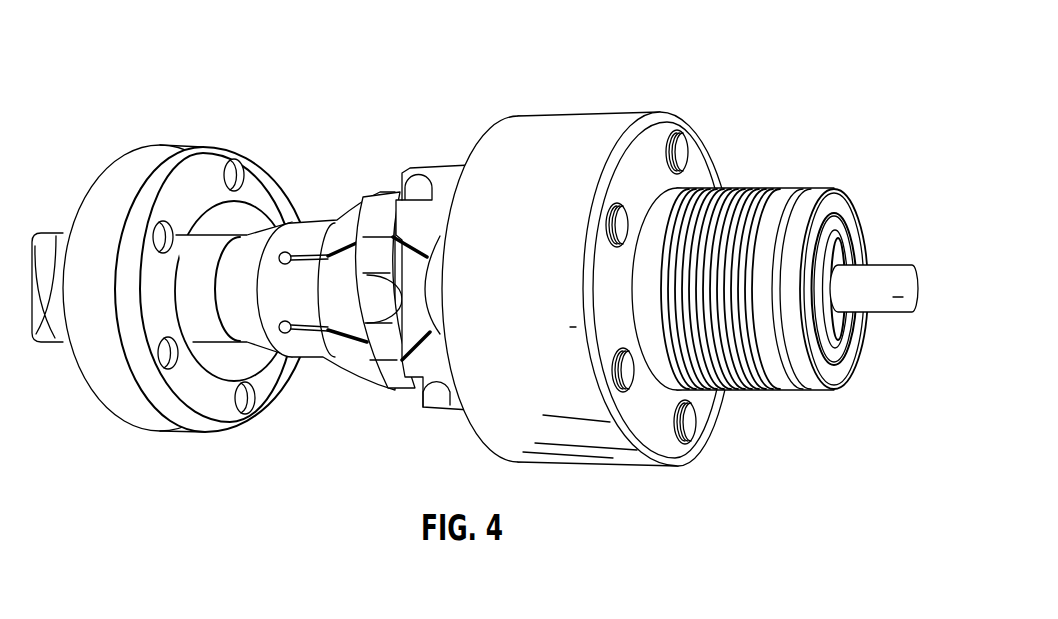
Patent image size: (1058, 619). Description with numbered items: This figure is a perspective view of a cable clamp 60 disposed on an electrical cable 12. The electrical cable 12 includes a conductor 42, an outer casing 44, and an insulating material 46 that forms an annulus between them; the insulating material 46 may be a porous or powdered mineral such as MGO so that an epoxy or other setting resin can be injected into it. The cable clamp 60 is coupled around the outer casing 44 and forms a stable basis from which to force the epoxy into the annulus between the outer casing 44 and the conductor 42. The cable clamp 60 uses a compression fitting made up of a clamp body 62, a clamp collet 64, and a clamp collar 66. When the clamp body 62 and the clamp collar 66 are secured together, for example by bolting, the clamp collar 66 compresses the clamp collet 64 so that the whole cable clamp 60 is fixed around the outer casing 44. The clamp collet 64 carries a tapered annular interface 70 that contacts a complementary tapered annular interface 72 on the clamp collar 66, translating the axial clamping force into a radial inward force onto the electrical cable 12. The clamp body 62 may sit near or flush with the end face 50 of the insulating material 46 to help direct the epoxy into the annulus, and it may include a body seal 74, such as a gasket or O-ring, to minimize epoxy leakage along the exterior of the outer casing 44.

The electrical cable 12 is at (696, 256).
The conductor 42 is at (897, 313).
The outer casing 44 is at (832, 353).
The insulating material 46 is at (830, 335).
The end face 50 is at (850, 248).
The cable clamp 60 is at (251, 245).
The clamp body 62 is at (593, 113).
The clamp collet 64 is at (373, 193).
The clamp collar 66 is at (183, 146).
The tapered annular interface 70 is at (355, 375).
The complementary tapered annular interface 72 is at (238, 214).
The body seal 74 is at (782, 222).